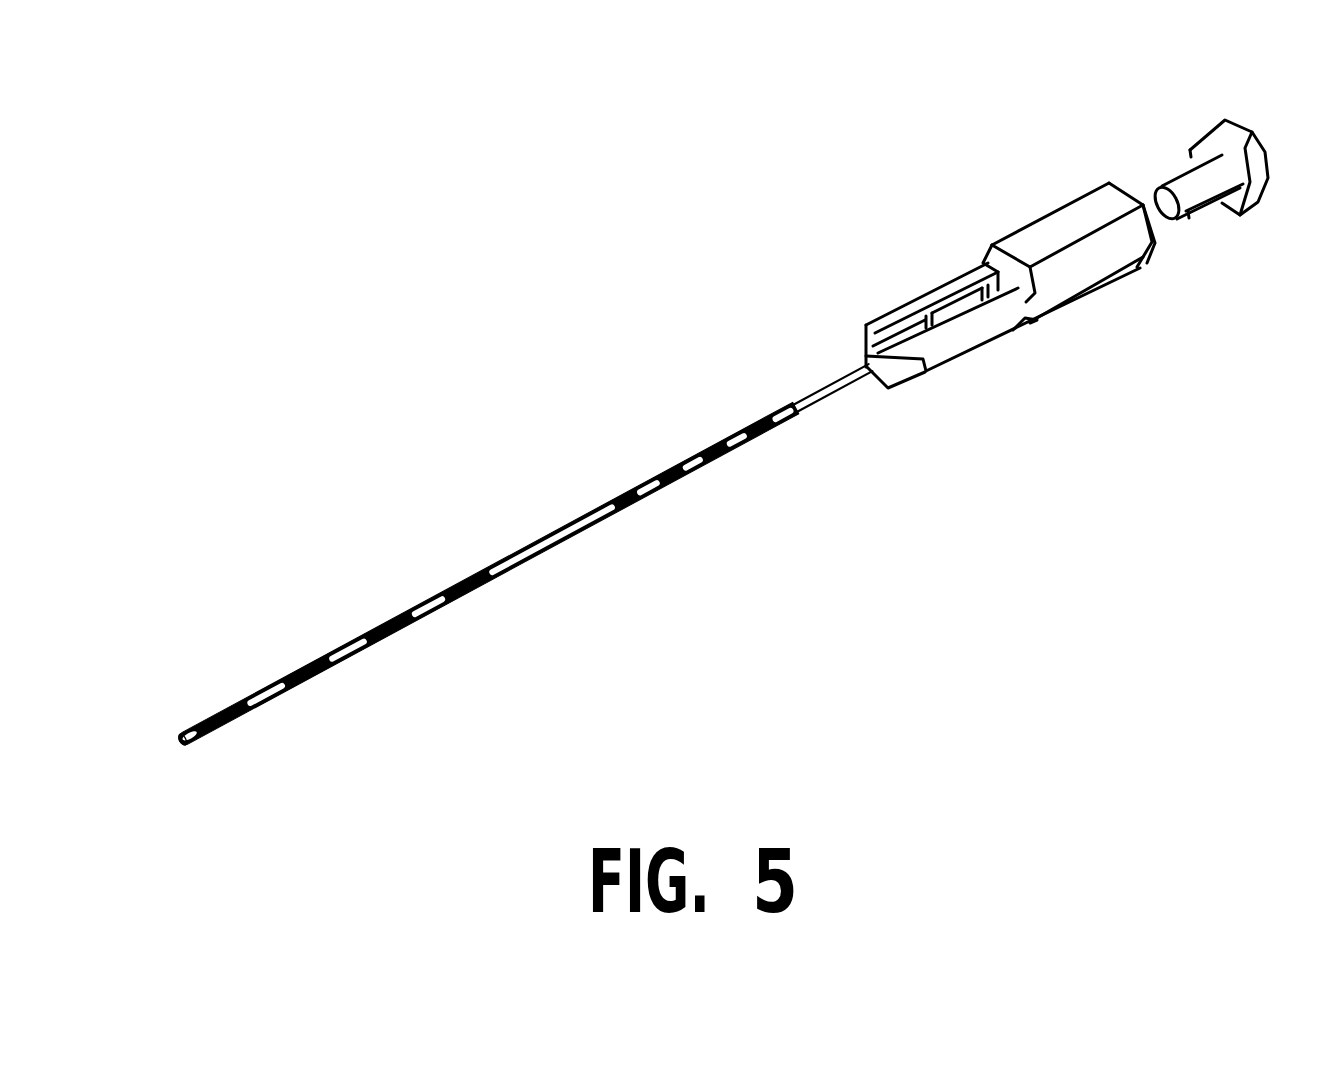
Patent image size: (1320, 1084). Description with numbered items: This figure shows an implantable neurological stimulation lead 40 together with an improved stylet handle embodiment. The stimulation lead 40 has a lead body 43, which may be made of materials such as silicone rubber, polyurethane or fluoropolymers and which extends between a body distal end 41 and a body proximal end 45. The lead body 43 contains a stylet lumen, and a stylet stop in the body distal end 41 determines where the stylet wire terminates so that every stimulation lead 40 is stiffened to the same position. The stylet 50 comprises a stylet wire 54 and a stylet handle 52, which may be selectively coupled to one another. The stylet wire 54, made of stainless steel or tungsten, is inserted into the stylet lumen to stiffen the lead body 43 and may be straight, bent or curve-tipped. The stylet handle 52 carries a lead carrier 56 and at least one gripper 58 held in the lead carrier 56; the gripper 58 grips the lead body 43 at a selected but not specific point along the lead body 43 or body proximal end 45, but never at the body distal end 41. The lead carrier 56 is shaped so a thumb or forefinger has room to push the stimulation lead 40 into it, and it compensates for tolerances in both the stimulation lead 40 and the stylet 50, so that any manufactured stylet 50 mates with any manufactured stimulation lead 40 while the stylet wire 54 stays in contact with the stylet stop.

The neurological stimulation lead 40 is at (488, 498).
The body distal end 41 is at (220, 774).
The lead body 43 is at (589, 562).
The body proximal end 45 is at (726, 492).
The stylet 50 is at (795, 224).
The stylet handle 52 is at (1062, 228).
The stylet wire 54 is at (851, 422).
The lead carrier 56 is at (966, 316).
The gripper 58 is at (864, 345).